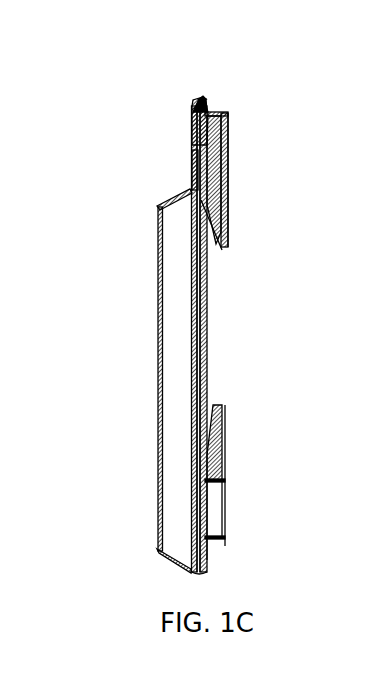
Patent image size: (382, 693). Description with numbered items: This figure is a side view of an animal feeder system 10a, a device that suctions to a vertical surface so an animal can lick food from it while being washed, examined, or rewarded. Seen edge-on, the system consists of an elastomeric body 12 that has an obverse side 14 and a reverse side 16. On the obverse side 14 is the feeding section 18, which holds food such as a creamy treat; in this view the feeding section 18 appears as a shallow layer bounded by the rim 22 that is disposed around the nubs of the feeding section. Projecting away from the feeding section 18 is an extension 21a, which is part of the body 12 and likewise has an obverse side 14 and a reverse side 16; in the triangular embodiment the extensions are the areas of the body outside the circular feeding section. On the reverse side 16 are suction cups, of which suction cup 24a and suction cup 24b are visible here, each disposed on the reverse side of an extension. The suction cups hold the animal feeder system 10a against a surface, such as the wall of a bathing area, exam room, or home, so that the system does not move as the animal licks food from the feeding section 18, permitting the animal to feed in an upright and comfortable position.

The animal feeder system 10a is at (70, 154).
The elastomeric body 12 is at (205, 77).
The obverse side 14 is at (174, 136).
The reverse side 16 is at (223, 308).
The feeding section 18 is at (117, 381).
The extension 21a is at (193, 168).
The rim 22 is at (171, 333).
The suction cup 24a is at (226, 167).
The suction cup 24b is at (226, 457).